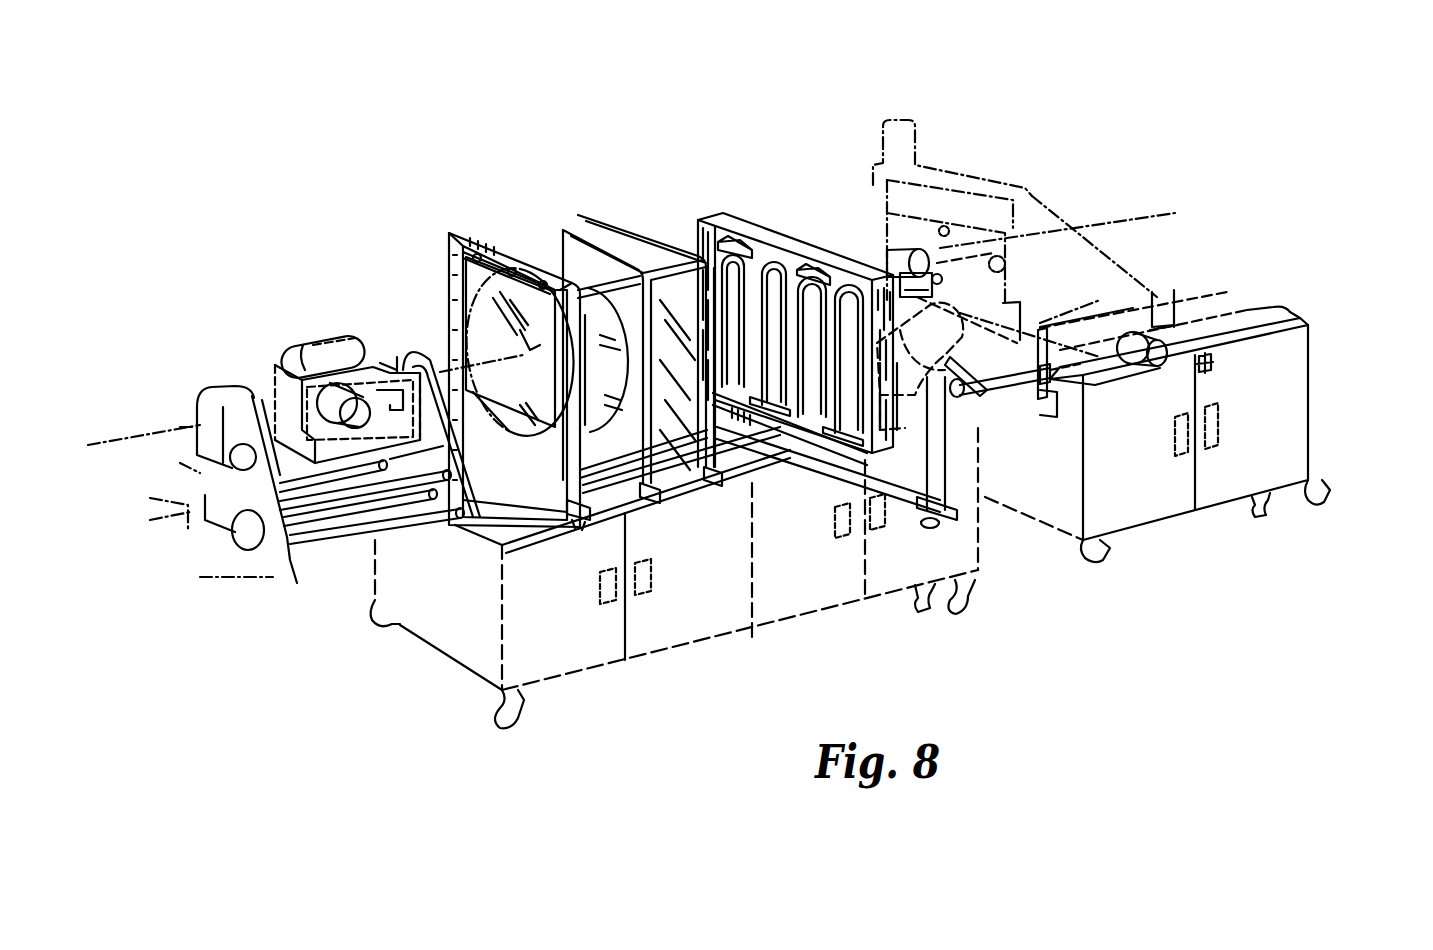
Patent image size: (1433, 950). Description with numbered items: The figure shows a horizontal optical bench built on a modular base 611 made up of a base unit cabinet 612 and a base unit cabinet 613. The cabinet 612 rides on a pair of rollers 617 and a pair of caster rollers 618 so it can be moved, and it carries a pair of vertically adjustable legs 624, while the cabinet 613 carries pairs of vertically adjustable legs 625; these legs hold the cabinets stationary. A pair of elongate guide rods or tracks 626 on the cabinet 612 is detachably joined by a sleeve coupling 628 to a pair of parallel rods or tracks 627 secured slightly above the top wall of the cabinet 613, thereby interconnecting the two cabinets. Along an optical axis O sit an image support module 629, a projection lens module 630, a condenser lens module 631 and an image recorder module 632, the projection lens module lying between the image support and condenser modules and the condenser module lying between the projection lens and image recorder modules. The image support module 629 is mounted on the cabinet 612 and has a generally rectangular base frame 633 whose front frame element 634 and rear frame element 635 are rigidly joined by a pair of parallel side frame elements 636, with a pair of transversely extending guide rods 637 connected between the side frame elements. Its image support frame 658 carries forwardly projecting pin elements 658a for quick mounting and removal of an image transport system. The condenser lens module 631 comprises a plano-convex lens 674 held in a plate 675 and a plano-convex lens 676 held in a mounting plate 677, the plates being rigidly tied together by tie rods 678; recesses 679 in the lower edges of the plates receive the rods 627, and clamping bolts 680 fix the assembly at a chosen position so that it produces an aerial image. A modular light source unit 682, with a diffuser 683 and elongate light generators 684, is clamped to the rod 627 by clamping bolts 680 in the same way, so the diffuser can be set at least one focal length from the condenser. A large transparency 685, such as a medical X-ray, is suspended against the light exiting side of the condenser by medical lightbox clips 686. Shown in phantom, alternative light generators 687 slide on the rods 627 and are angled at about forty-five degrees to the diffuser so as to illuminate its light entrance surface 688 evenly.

The modular base 611 is at (1055, 590).
The base unit cabinet 612 is at (1322, 393).
The base unit cabinet 613 is at (447, 650).
The rollers 617 is at (1105, 553).
The caster rollers 618 is at (1316, 490).
The vertically adjustable legs 624 is at (1262, 497).
The vertically adjustable legs 625 is at (918, 598).
The elongate guide rods or tracks 626 is at (1258, 318).
The elongate substantially parallel rods or tracks 627 is at (235, 570).
The sleeve coupling 628 is at (1000, 392).
The image support module 629 is at (1125, 186).
The projection lens module 630 is at (875, 232).
The condenser lens module 631 is at (476, 220).
The image recorder module 632 is at (290, 338).
The base frame 633 is at (1040, 195).
The front frame element 634 is at (960, 340).
The rear frame element 635 is at (1185, 315).
The side frame elements 636 is at (1090, 357).
The guide rods 637 is at (1162, 322).
The image support frame 658 is at (916, 259).
The pin elements 658a is at (970, 235).
The plano-convex lens 674 is at (540, 232).
The plate 675 is at (560, 240).
The plano-convex lens 676 is at (520, 425).
The mounting plate 677 is at (452, 290).
The tie rods 678 is at (505, 248).
The recesses 679 is at (568, 525).
The clamping bolts 680 is at (805, 463).
The modular light source unit 682 is at (765, 122).
The diffuser 683 is at (670, 230).
The elongate light generators 684 is at (775, 262).
The transparency 685 is at (472, 318).
The medical lightbox clips 686 is at (460, 250).
The light generators 687 is at (968, 405).
The light entrance surface 688 is at (712, 222).
The optical axis O is at (150, 432).